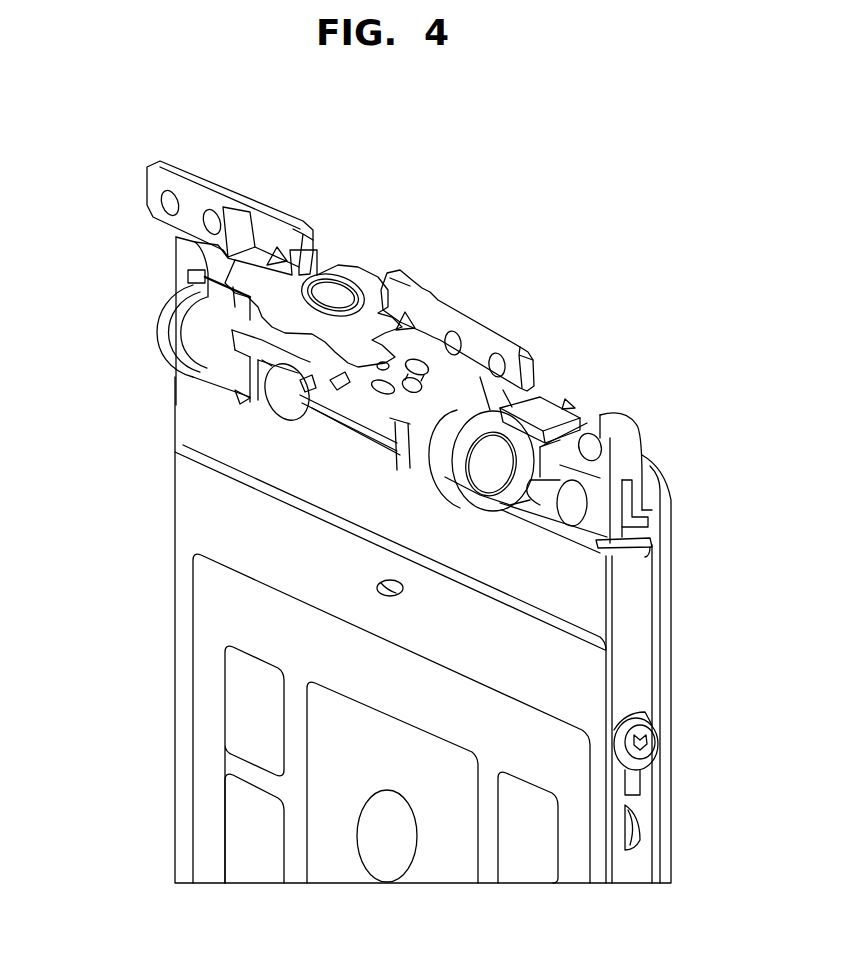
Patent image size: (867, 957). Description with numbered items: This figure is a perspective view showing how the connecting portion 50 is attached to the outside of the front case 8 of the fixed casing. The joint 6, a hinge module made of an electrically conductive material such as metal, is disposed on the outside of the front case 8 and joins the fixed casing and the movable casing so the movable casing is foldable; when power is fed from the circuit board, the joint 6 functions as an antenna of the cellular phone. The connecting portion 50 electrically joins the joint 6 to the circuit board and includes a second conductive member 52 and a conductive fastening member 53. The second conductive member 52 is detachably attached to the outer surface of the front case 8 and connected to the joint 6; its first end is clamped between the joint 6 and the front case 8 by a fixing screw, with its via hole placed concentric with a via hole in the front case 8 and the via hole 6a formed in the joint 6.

The front case 8 is at (213, 435).
The joint 6 is at (460, 390).
The via hole 6a is at (575, 438).
The connecting portion 50 is at (648, 525).
The second conductive member 52 is at (655, 718).
The conductive fastening member 53 is at (648, 755).